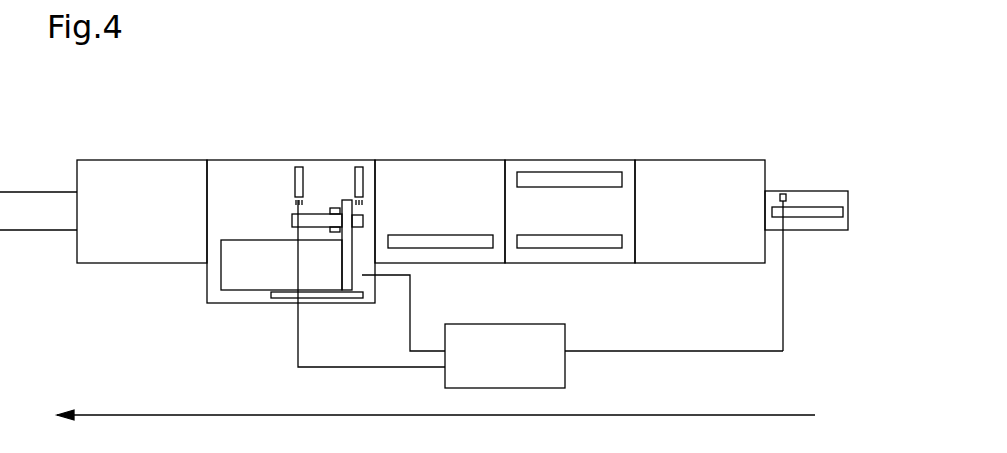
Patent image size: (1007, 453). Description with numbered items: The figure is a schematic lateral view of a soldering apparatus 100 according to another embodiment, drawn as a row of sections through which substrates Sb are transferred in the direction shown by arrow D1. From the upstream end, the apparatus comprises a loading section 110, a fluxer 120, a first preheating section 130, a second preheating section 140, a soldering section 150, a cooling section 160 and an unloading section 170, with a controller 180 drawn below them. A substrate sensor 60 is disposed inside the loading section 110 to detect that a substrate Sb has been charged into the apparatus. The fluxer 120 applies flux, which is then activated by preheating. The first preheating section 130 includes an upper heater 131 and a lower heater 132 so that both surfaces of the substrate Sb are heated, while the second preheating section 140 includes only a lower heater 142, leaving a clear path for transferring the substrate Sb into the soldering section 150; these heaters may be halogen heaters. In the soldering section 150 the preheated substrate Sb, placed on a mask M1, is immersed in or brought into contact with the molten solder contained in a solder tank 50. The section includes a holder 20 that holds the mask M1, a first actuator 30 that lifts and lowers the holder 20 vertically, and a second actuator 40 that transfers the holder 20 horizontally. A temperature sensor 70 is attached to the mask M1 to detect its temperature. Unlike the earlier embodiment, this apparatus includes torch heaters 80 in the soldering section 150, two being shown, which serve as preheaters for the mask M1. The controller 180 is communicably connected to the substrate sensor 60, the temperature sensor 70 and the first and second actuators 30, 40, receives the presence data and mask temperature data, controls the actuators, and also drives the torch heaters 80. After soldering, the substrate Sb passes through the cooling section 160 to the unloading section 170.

The soldering apparatus 100 is at (791, 67).
The unloading section 170 is at (33, 192).
The cooling section 160 is at (139, 160).
The soldering section 150 is at (229, 160).
The second preheating section 140 is at (438, 160).
The lower heater 142 is at (485, 248).
The first preheating section 130 is at (567, 160).
The upper heater 131 is at (612, 178).
The lower heater 132 is at (609, 248).
The fluxer 120 is at (699, 160).
The loading section 110 is at (803, 191).
The substrate Sb is at (838, 212).
The substrate sensor 60 is at (782, 193).
The controller 180 is at (565, 378).
The solder tank 50 is at (240, 280).
The second actuator 40 is at (278, 298).
The first actuator 30 is at (340, 265).
The temperature sensor 70 is at (292, 222).
The holder 20 is at (338, 210).
The torch heater 80 is at (299, 167).
The mask M1 is at (293, 215).
The transfer direction D1 is at (805, 414).